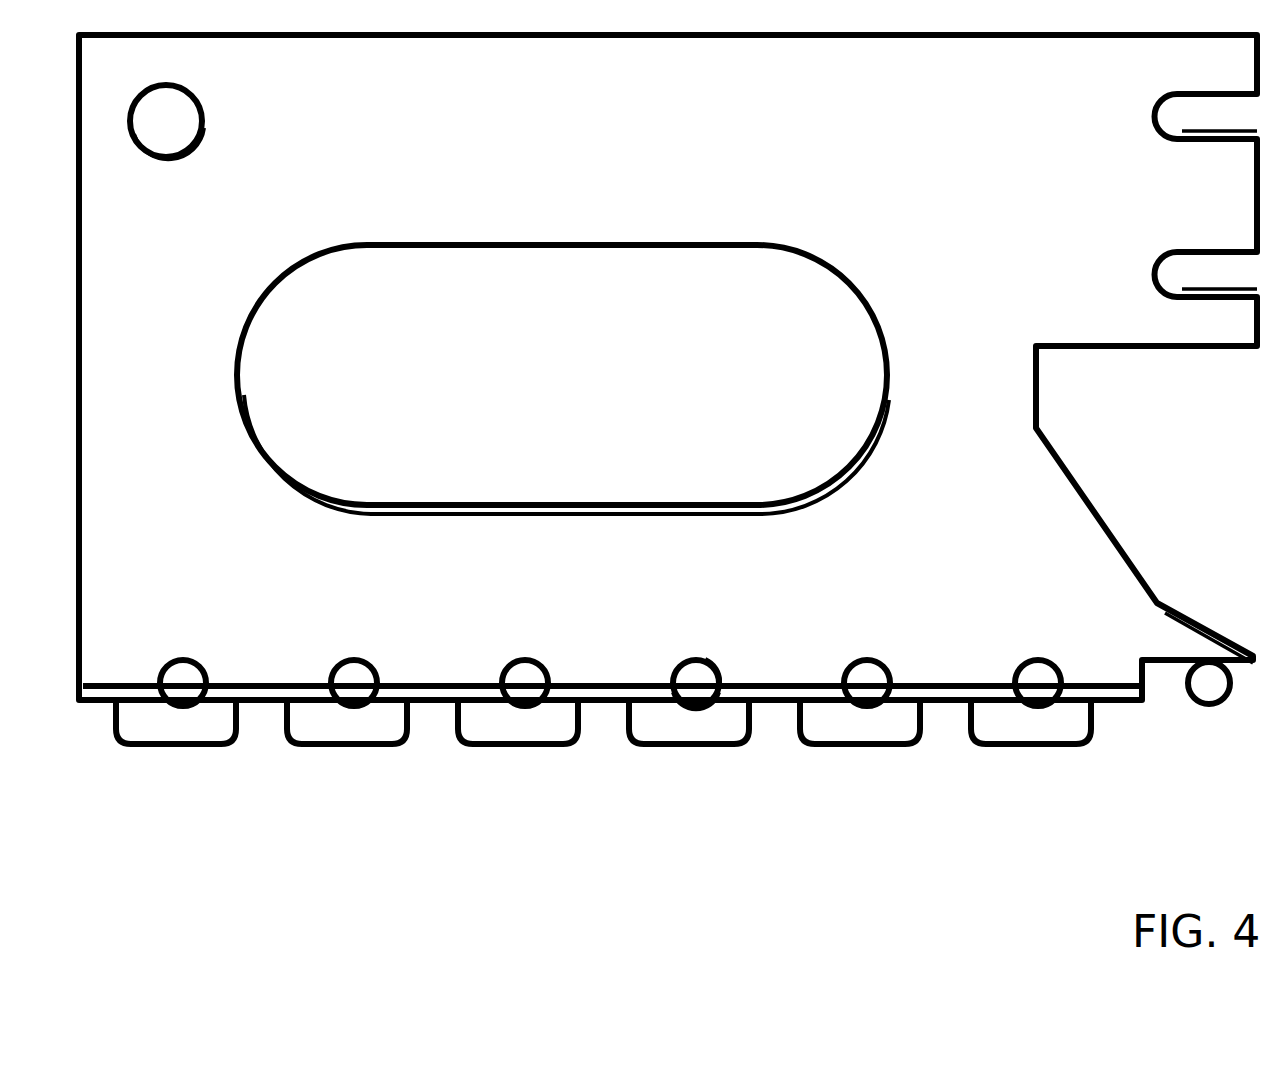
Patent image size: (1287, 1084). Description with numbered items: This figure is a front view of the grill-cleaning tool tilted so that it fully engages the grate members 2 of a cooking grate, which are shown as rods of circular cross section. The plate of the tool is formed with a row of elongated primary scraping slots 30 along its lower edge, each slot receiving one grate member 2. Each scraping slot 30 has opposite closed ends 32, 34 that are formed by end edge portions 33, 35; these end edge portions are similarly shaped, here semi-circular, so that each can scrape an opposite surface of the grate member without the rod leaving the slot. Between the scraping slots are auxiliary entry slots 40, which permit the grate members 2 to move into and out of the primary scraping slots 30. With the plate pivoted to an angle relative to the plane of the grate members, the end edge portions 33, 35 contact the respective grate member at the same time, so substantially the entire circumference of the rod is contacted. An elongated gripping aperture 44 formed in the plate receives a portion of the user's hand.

The grate member 2 is at (868, 687).
The primary scraping slot 30 is at (905, 662).
The end of scraping slot 32 is at (685, 645).
The end edge portion 33 is at (705, 657).
The end of scraping slot 34 is at (660, 717).
The end edge portion 35 is at (706, 704).
The auxiliary entry slot 40 is at (776, 735).
The gripping aperture 44 is at (822, 490).